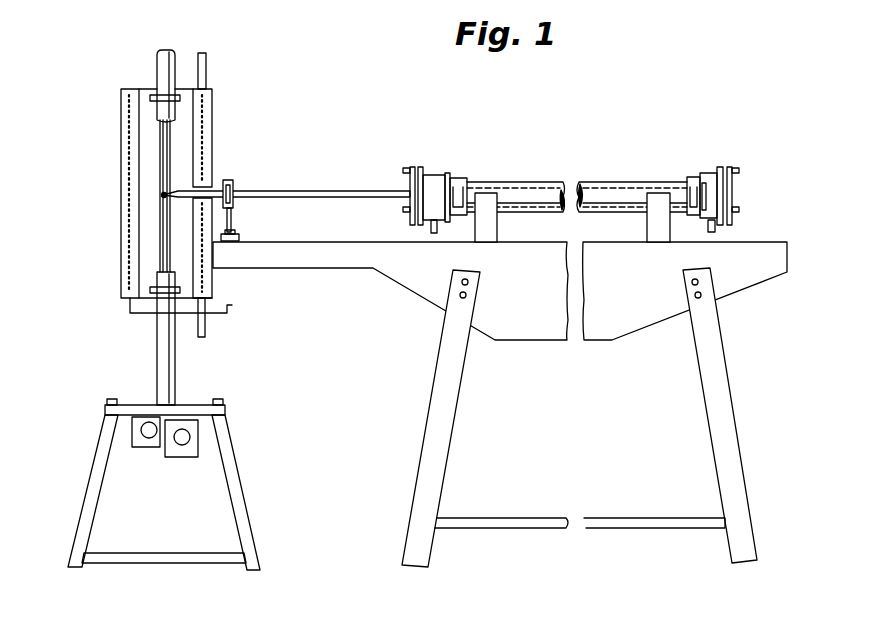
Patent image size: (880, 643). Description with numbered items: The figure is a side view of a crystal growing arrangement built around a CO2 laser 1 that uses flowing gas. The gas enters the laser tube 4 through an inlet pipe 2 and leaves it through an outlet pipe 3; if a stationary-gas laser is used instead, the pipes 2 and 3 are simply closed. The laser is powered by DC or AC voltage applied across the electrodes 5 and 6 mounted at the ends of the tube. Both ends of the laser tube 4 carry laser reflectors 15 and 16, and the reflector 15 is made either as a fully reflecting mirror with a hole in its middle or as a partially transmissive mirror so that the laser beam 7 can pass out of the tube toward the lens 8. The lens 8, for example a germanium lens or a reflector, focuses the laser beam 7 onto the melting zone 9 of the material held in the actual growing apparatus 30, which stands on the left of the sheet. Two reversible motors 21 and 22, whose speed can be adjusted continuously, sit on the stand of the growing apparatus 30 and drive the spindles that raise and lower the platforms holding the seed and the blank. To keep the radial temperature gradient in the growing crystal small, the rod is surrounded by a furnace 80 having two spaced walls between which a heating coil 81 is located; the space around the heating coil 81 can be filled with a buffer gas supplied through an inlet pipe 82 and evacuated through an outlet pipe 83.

The CO2 laser 1 is at (548, 190).
The inlet pipe 2 is at (433, 234).
The outlet pipe 3 is at (710, 172).
The laser tube 4 is at (517, 190).
The electrode 5 is at (460, 180).
The electrode 6 is at (690, 178).
The laser beam 7 is at (300, 190).
The lens 8 is at (233, 188).
The melting zone 9 is at (162, 196).
The laser reflector 15 is at (180, 98).
The laser reflector 16 is at (150, 290).
The reversible motor 21 is at (148, 435).
The reversible motor 22 is at (182, 441).
The growing apparatus 30 is at (249, 494).
The furnace 80 is at (121, 147).
The heating coil 81 is at (128, 189).
The inlet pipe 82 is at (205, 332).
The outlet pipe 83 is at (206, 58).